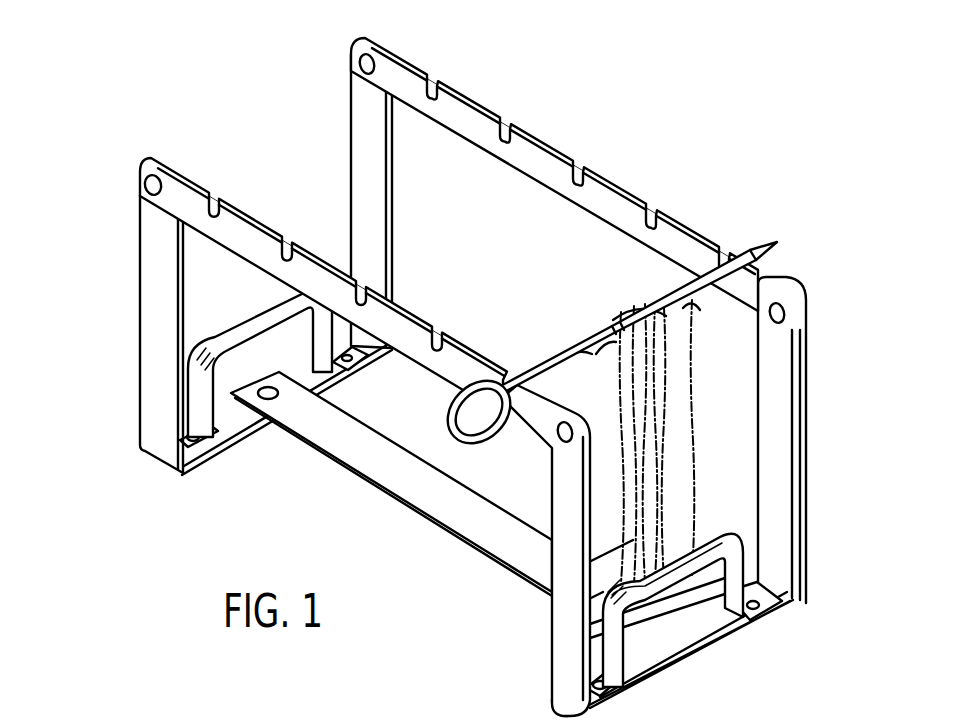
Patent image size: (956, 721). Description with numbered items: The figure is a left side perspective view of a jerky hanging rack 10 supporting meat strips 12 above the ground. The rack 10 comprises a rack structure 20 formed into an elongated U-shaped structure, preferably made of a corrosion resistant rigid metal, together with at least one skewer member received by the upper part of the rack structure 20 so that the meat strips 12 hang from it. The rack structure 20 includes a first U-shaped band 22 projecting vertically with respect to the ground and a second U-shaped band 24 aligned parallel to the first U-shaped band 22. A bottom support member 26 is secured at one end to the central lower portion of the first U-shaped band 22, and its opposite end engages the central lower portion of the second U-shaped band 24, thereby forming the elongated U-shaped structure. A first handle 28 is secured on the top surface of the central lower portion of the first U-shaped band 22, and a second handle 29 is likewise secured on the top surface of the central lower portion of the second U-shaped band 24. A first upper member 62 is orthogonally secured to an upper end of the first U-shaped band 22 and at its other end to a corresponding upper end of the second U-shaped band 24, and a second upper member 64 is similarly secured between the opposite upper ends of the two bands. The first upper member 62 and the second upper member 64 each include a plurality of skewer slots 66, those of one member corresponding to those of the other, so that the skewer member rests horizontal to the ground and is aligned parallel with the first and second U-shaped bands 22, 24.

The jerky hanging rack 10 is at (185, 128).
The meat strips 12 is at (607, 404).
The rack structure 20 is at (225, 265).
The first U-shaped band 22 is at (804, 488).
The second U-shaped band 24 is at (355, 137).
The bottom support member 26 is at (510, 532).
The first handle 28 is at (745, 622).
The second handle 29 is at (251, 328).
The first upper member 62 is at (527, 153).
The second upper member 64 is at (435, 345).
The skewer slots 66 is at (430, 75).